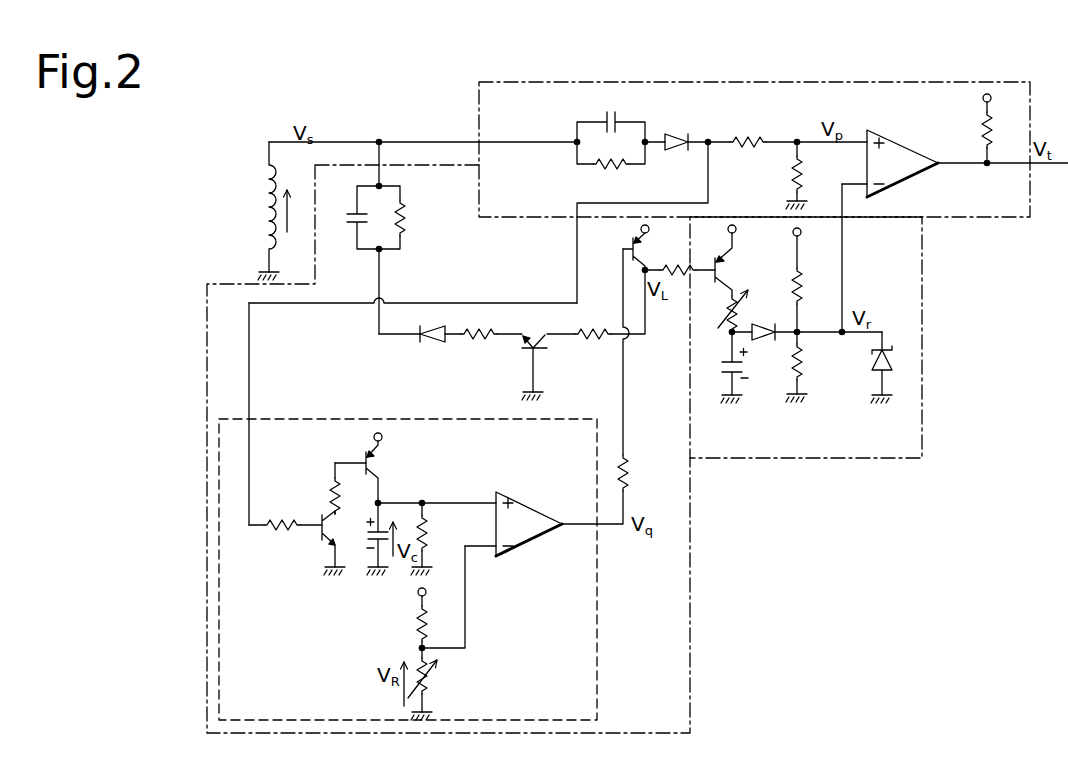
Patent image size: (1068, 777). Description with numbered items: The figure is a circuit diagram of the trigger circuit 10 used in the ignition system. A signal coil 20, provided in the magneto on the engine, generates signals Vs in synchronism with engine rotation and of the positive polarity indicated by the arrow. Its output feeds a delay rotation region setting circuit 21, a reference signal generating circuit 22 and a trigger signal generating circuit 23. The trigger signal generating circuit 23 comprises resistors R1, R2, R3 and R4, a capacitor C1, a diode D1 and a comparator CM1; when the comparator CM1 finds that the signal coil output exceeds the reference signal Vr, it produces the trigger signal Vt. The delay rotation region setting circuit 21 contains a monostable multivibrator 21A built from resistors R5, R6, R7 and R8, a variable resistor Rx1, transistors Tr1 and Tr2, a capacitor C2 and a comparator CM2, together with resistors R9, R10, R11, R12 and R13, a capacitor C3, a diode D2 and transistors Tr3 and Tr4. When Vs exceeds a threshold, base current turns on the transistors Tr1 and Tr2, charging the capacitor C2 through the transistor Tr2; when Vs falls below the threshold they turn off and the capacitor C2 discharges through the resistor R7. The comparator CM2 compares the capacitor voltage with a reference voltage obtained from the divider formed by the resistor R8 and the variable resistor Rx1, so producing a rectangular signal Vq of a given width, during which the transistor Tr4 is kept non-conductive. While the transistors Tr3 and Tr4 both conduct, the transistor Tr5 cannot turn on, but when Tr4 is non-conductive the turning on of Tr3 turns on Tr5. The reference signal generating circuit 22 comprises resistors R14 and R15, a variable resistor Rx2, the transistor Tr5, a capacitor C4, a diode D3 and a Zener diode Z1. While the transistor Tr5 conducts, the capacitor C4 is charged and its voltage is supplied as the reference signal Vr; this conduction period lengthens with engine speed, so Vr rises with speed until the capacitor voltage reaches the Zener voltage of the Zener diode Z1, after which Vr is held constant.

The trigger circuit 10 is at (996, 50).
The signal coil 20 is at (266, 167).
The delay rotation region setting circuit 21 is at (693, 530).
The monostable multivibrator 21A is at (600, 612).
The reference signal generating circuit 22 is at (923, 300).
The trigger signal generating circuit 23 is at (797, 81).
The capacitor C1 is at (618, 120).
The capacitor C2 is at (371, 543).
The capacitor C3 is at (352, 232).
The capacitor C4 is at (722, 368).
The resistor R1 is at (612, 168).
The resistor R2 is at (748, 136).
The resistor R3 is at (792, 172).
The resistor R4 is at (982, 128).
The resistor R5 is at (282, 521).
The resistor R6 is at (330, 480).
The resistor R7 is at (430, 528).
The resistor R8 is at (428, 620).
The resistor R9 is at (628, 471).
The resistor R10 is at (588, 347).
The resistor R11 is at (479, 346).
The resistor R12 is at (410, 214).
The resistor R13 is at (675, 280).
The resistor R14 is at (802, 289).
The resistor R15 is at (800, 378).
The variable resistor Rx1 is at (429, 688).
The variable resistor Rx2 is at (720, 318).
The diode D1 is at (681, 133).
The diode D2 is at (426, 345).
The diode D3 is at (764, 325).
The Zener diode Z1 is at (886, 372).
The transistor Tr1 is at (330, 544).
The transistor Tr2 is at (382, 463).
The transistor Tr3 is at (535, 345).
The transistor Tr4 is at (633, 256).
The transistor Tr5 is at (731, 269).
The comparator CM1 is at (902, 148).
The comparator CM2 is at (518, 501).